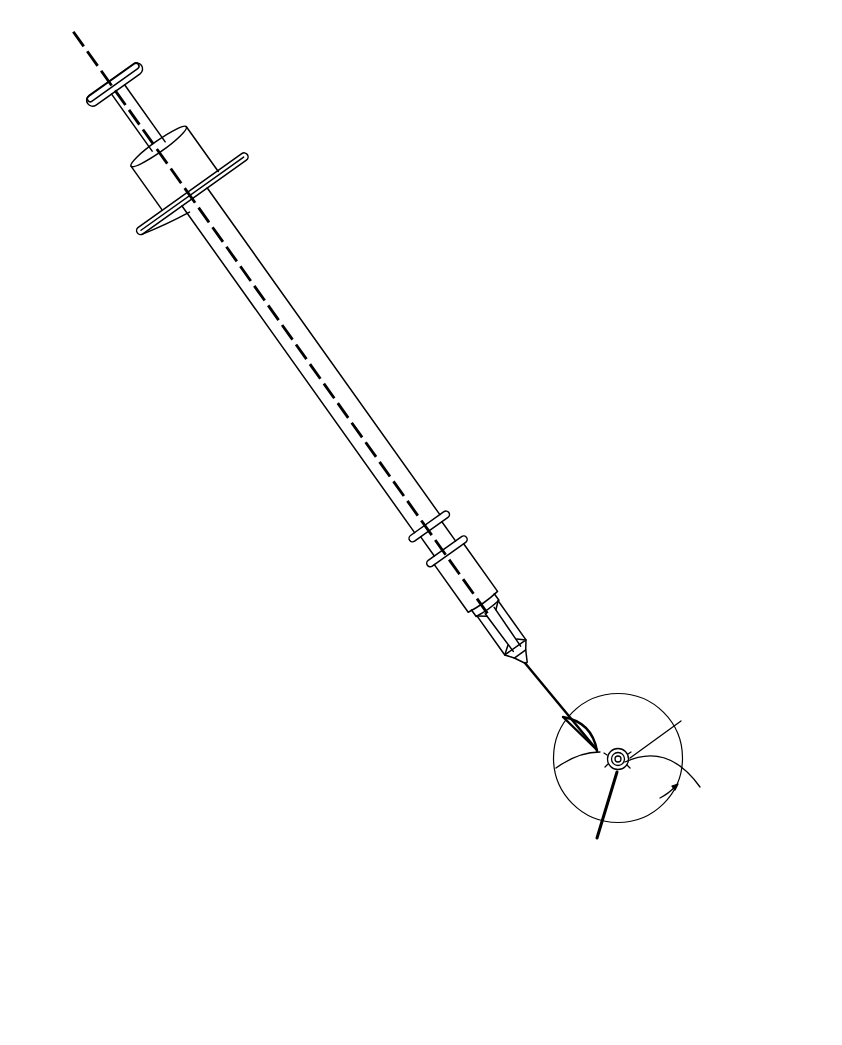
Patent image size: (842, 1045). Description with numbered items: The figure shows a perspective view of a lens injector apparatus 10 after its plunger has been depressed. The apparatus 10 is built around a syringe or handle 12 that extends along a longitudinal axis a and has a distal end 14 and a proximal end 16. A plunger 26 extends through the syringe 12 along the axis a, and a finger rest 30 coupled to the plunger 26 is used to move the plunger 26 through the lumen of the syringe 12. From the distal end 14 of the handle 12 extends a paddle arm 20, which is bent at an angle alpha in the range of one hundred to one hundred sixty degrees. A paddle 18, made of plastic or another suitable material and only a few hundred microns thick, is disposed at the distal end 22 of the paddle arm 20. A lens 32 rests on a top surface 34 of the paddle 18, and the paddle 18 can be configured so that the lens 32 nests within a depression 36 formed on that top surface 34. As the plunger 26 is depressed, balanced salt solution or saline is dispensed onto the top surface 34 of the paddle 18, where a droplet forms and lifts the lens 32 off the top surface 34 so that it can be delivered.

The lens injector apparatus 10 is at (278, 483).
The longitudinal axis a is at (274, 312).
The syringe 12 is at (268, 277).
The distal end 14 is at (490, 617).
The proximal end 16 is at (202, 232).
The paddle 18 is at (613, 770).
The paddle arm 20 is at (536, 681).
The distal end 22 is at (556, 768).
The plunger 26 is at (149, 113).
The finger rest 30 is at (97, 96).
The lens 32 is at (598, 818).
The top surface 34 is at (674, 784).
The depression 36 is at (669, 733).